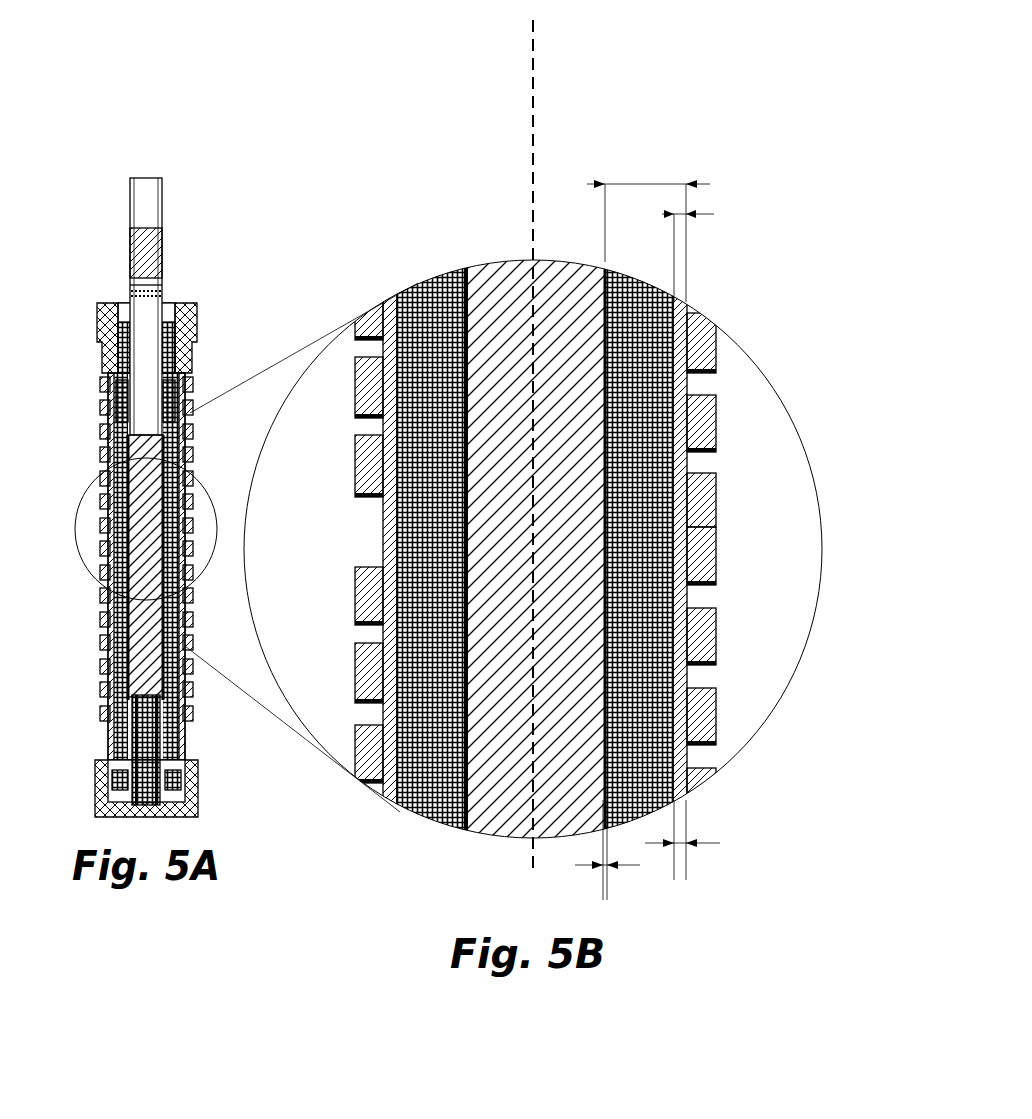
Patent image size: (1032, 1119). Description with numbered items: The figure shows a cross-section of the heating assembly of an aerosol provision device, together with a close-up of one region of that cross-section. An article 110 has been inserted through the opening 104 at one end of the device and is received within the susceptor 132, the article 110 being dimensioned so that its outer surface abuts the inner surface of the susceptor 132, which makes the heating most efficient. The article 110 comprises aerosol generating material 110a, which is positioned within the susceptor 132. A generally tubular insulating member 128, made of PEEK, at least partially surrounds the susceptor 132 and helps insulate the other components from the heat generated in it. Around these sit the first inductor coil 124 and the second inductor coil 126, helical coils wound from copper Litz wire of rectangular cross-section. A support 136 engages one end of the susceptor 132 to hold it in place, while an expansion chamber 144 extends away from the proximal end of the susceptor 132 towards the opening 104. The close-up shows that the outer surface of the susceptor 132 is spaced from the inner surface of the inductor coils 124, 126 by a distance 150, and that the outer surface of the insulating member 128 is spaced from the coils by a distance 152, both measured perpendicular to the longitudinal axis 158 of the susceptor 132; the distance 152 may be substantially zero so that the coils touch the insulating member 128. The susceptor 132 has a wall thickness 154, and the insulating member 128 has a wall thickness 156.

In FIG. 5A, the opening 104 is at (157, 303).
In FIG. 5A, the article 110 is at (148, 214).
In FIG. 5A, the aerosol generating material 110a is at (148, 673).
In FIG. 5B, the aerosol generating material 110a is at (517, 787).
In FIG. 5A, the first inductor coil 124 is at (105, 450).
In FIG. 5B, the first inductor coil 124 is at (362, 467).
In FIG. 5A, the second inductor coil 126 is at (106, 640).
In FIG. 5B, the second inductor coil 126 is at (360, 657).
In FIG. 5A, the insulating member 128 is at (108, 525).
In FIG. 5B, the insulating member 128 is at (388, 538).
In FIG. 5B, the susceptor arrangement 132 is at (466, 302).
In FIG. 5A, the support 136 is at (135, 702).
In FIG. 5A, the expansion chamber 144 is at (120, 396).
In FIG. 5B, the distance 150 is at (650, 183).
In FIG. 5B, the distance 152 is at (690, 213).
In FIG. 5B, the wall thickness 154 is at (600, 866).
In FIG. 5B, the wall thickness 156 is at (690, 843).
In FIG. 5B, the longitudinal axis 158 is at (530, 53).